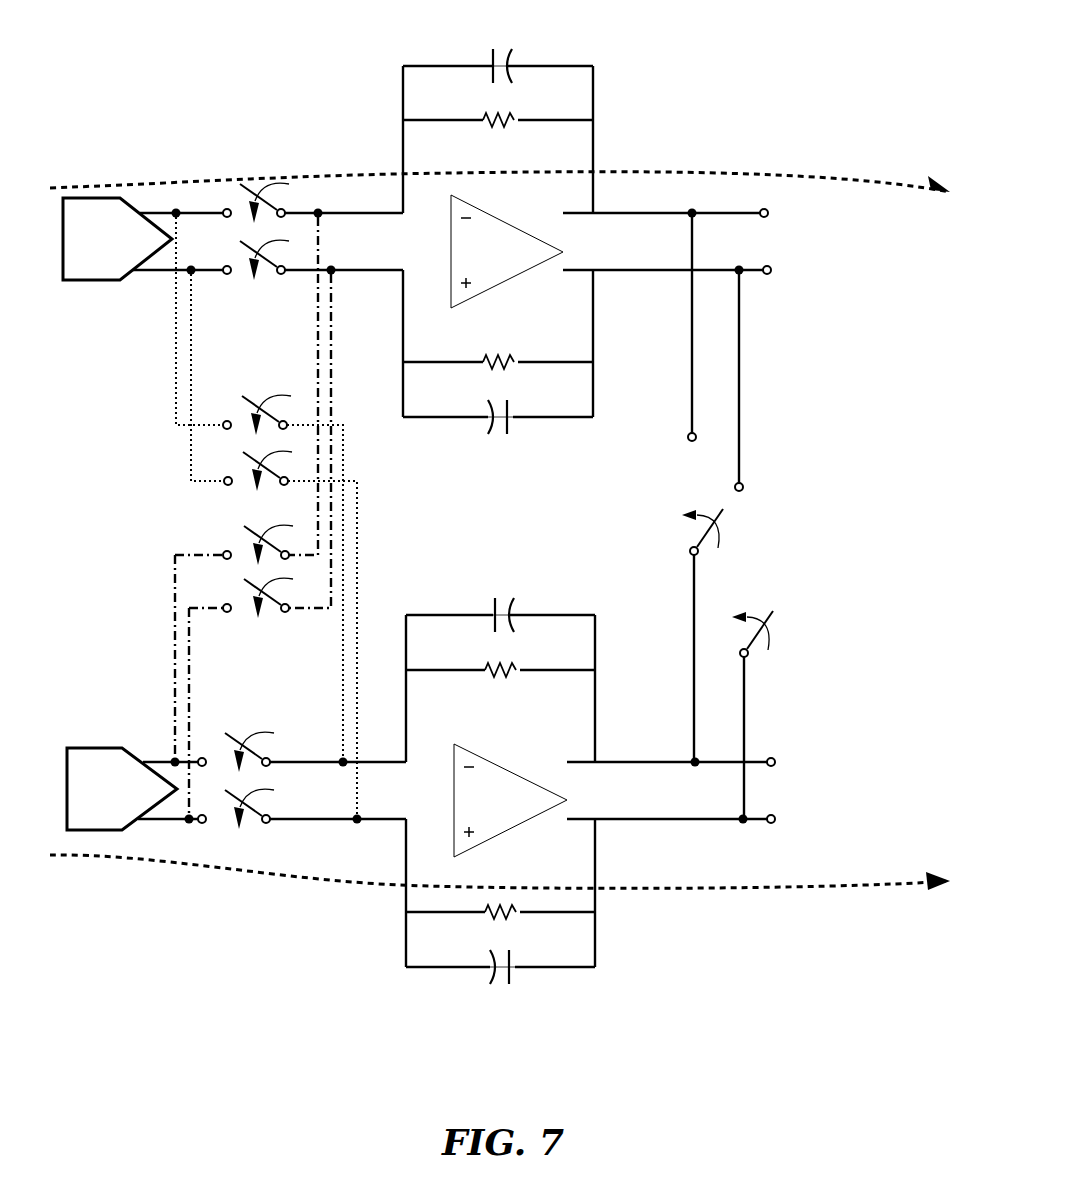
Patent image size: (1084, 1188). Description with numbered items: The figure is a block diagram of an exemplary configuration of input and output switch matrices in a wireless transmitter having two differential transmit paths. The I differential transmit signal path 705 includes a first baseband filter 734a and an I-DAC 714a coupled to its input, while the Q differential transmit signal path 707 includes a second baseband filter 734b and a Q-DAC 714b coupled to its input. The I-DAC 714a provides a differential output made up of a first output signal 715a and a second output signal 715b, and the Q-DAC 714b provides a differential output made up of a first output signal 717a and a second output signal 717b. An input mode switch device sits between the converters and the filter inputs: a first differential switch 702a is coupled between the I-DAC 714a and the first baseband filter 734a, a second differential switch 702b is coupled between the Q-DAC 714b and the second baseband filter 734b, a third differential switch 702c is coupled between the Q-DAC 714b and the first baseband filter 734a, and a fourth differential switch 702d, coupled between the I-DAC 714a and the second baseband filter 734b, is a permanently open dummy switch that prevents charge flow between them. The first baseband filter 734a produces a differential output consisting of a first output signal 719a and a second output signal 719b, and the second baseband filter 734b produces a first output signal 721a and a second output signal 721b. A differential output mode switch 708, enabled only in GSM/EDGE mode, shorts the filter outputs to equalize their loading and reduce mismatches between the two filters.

The first differential switch 702a is at (318, 259).
The second differential switch 702b is at (315, 799).
The third differential switch 702c is at (258, 594).
The fourth differential switch 702d is at (261, 456).
The I differential transmit signal path 705 is at (343, 172).
The Q differential transmit signal path 707 is at (360, 892).
The differential output mode switch 708 is at (750, 664).
The I-DAC 714a is at (117, 239).
The Q-DAC 714b is at (122, 789).
The first output signal 715a is at (161, 210).
The second output signal 715b is at (161, 274).
The first output signal 717a is at (160, 762).
The second output signal 717b is at (168, 822).
The first output signal 719a is at (718, 212).
The second output signal 719b is at (708, 272).
The first output signal 721a is at (713, 760).
The second output signal 721b is at (688, 822).
The first baseband filter 734a is at (507, 251).
The second baseband filter 734b is at (510, 800).